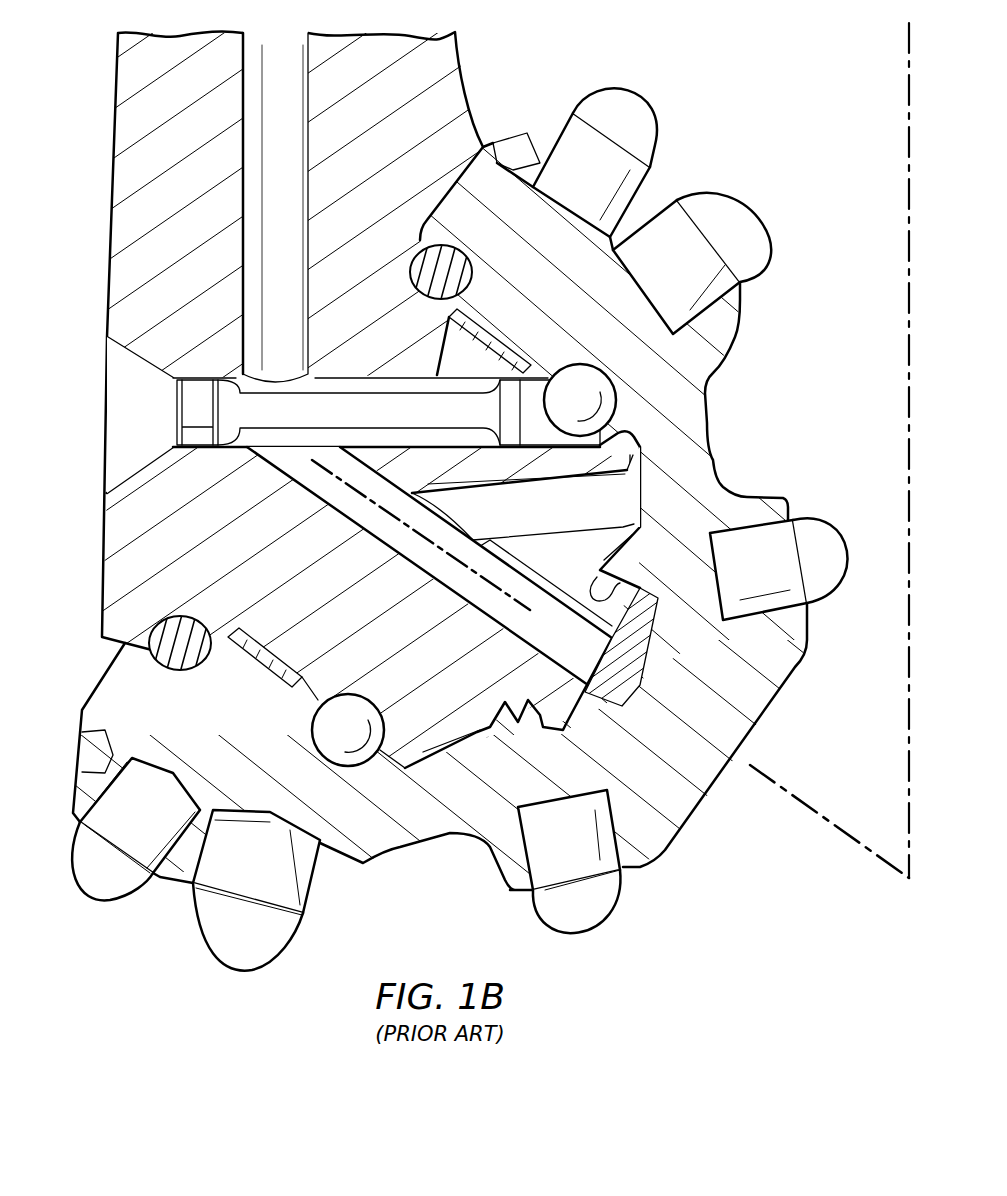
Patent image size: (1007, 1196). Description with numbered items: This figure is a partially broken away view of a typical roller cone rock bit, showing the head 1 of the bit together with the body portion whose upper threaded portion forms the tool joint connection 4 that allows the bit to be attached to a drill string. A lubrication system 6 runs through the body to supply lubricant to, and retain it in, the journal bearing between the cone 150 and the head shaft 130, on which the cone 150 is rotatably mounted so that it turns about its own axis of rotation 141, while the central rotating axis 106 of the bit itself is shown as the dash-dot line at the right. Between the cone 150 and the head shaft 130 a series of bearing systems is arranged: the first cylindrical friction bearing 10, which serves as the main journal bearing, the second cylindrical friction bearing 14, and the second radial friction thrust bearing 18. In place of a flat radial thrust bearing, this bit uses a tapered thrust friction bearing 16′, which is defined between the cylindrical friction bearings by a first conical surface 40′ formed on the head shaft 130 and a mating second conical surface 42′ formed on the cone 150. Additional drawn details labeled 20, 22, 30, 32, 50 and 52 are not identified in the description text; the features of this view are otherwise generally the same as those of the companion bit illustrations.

The head 1 is at (78, 270).
The tool joint connection 4 is at (112, 172).
The lubrication system 6 is at (292, 382).
The first cylindrical friction bearing 10 is at (236, 668).
The second cylindrical friction bearing 14 is at (612, 577).
The tapered thrust friction bearing 16′ is at (646, 484).
The second radial friction (thrust) bearing 18 is at (647, 662).
The retaining bar 20 is at (252, 645).
The pin 22 is at (272, 688).
The sleeve 30 is at (597, 575).
The step 32 is at (523, 726).
The first conical surface 40′ is at (448, 742).
The second conical surface 42′ is at (455, 748).
The cutter holder 50 is at (572, 682).
The stepped surface 52 is at (585, 725).
The central rotating axis 106 is at (907, 378).
The head shaft 130 is at (407, 630).
The axis of rotation 141 is at (812, 812).
The cone 150 is at (96, 672).